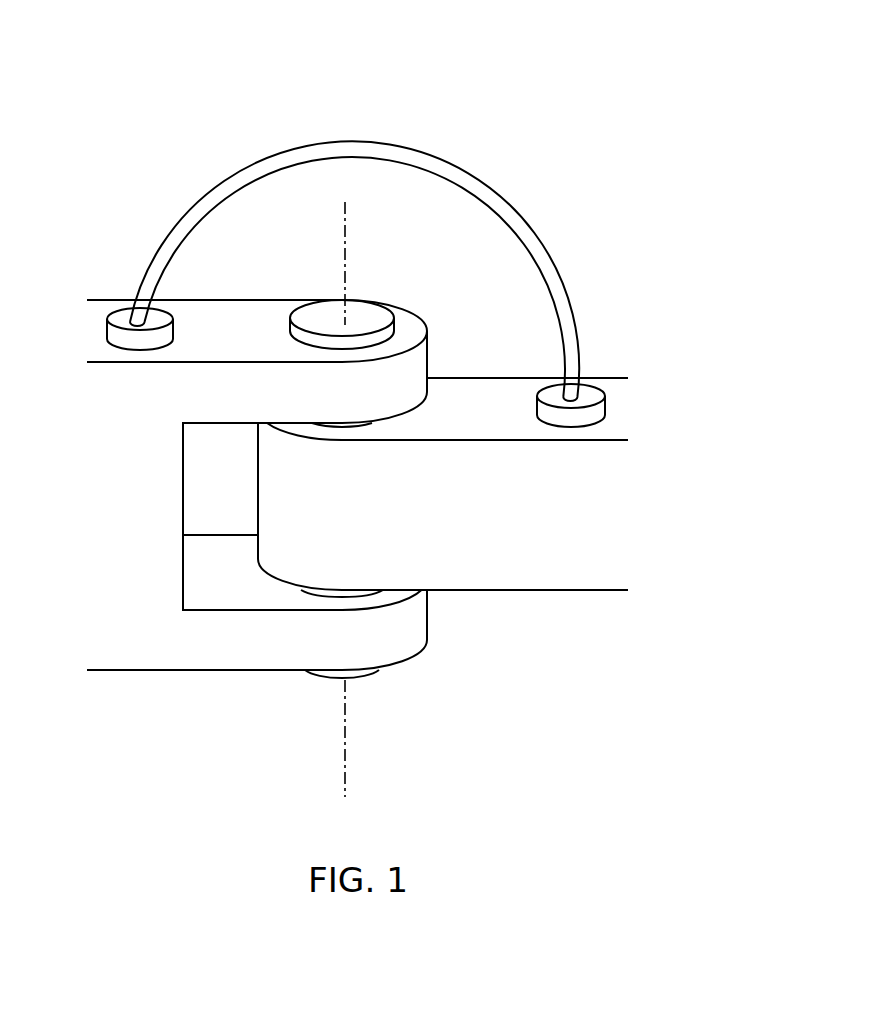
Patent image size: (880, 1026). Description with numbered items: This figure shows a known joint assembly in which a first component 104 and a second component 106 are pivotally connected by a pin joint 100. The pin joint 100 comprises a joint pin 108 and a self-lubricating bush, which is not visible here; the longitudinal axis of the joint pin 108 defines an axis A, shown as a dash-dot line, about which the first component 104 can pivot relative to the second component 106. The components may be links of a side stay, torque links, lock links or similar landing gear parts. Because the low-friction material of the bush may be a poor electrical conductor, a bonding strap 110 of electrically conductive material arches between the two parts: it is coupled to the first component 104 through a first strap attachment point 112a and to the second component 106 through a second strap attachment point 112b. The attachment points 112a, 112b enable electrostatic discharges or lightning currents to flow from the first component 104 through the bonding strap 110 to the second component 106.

The pin joint 100 is at (145, 96).
The first component 104 is at (142, 520).
The second component 106 is at (493, 514).
The joint pin 108 is at (375, 312).
The bonding strap 110 is at (469, 168).
The first strap attachment point 112a is at (590, 394).
The second strap attachment point 112b is at (120, 311).